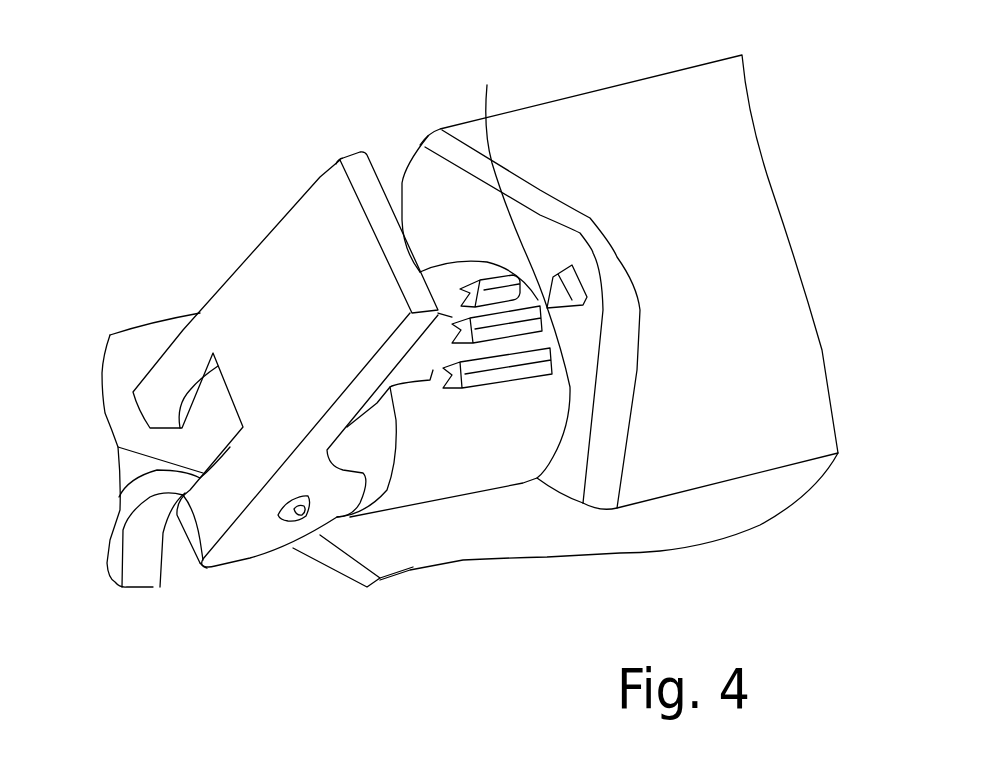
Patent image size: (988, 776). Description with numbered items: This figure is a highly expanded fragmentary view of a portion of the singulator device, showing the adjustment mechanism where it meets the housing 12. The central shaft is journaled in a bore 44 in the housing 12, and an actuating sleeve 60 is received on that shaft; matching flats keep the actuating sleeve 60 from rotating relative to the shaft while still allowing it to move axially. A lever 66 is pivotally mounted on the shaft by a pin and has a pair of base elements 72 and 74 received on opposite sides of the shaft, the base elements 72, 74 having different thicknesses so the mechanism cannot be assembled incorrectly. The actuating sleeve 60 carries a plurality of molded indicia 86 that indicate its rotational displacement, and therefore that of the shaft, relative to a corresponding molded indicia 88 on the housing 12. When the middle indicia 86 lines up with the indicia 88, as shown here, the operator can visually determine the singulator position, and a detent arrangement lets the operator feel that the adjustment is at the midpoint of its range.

The housing 12 is at (643, 428).
The bore 44 is at (570, 403).
The actuating sleeve 60 is at (470, 497).
The lever 66 is at (247, 252).
The base element 72 is at (267, 567).
The base element 74 is at (147, 373).
The molded indicia 86 is at (512, 280).
The molded indicia 88 is at (548, 288).